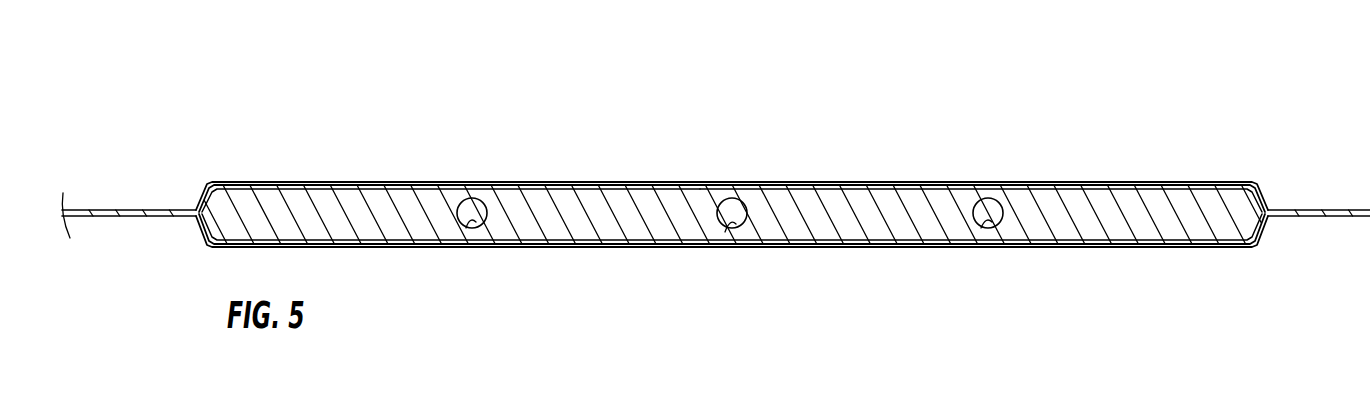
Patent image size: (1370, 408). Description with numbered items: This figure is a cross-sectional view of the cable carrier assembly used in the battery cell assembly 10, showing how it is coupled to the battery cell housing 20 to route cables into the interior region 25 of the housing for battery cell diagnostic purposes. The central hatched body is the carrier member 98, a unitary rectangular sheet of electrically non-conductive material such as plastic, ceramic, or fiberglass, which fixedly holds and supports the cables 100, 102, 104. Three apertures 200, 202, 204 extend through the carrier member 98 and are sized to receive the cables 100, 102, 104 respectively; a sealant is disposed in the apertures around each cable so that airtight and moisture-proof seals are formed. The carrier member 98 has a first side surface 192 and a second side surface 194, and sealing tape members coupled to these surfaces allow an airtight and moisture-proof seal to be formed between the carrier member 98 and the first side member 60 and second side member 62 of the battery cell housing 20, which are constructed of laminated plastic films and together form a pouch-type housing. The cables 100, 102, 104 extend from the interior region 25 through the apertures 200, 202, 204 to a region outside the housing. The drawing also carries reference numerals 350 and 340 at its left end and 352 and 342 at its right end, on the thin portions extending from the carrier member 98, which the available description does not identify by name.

The battery cell assembly 10 is at (1063, 93).
The battery cell housing 20 is at (333, 180).
The interior region 25 is at (1165, 188).
The first side member 60 is at (822, 250).
The second side member 62 is at (810, 182).
The carrier member 98 is at (422, 220).
The cable 100 is at (478, 205).
The cable 102 is at (733, 205).
The cable 104 is at (988, 208).
The first side surface 192 is at (598, 238).
The second side surface 194 is at (621, 190).
The aperture 200 is at (468, 226).
The aperture 202 is at (727, 230).
The aperture 204 is at (983, 226).
The left lower flange 340 is at (191, 218).
The right lower flange 342 is at (1271, 217).
The left upper flange 350 is at (193, 208).
The right upper flange 352 is at (1269, 211).